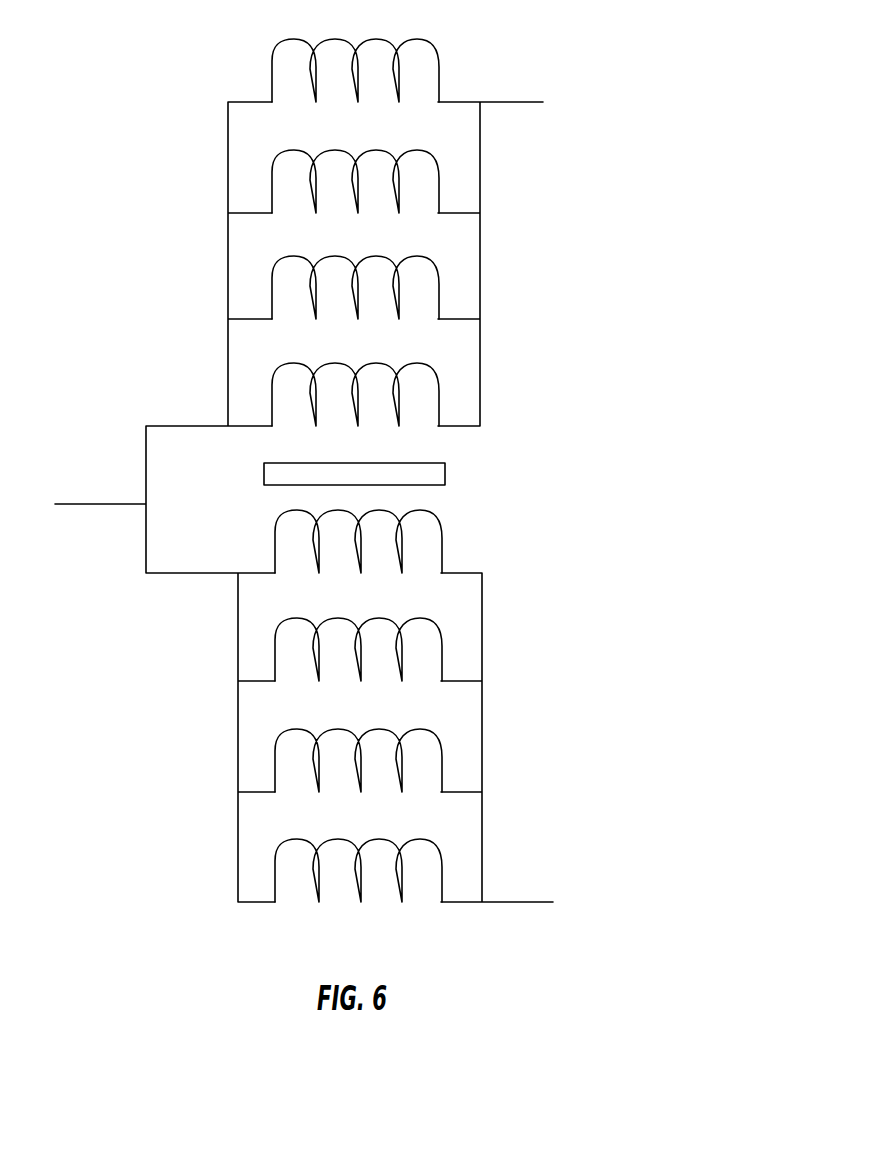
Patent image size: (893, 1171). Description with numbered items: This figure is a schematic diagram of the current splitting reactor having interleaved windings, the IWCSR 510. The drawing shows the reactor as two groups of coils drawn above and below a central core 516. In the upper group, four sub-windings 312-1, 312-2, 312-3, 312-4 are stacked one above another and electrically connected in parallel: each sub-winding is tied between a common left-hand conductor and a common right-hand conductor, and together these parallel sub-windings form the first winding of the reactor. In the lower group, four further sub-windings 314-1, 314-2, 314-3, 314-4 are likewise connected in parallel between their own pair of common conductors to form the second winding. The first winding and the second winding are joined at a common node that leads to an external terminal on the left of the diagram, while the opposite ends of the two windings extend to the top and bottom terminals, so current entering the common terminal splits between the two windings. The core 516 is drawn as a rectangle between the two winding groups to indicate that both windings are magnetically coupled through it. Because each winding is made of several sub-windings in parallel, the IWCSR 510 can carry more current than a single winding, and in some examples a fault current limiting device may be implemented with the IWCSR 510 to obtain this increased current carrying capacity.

The interleaved winding current splitting reactor (IWCSR) 510 is at (48, 98).
The sub-winding 312-1 is at (342, 355).
The sub-winding 312-2 is at (342, 247).
The sub-winding 312-3 is at (342, 138).
The sub-winding 312-4 is at (342, 27).
The sub-winding 314-1 is at (342, 605).
The sub-winding 314-2 is at (342, 713).
The sub-winding 314-3 is at (342, 822).
The sub-winding 314-4 is at (342, 936).
The core 516 is at (445, 474).